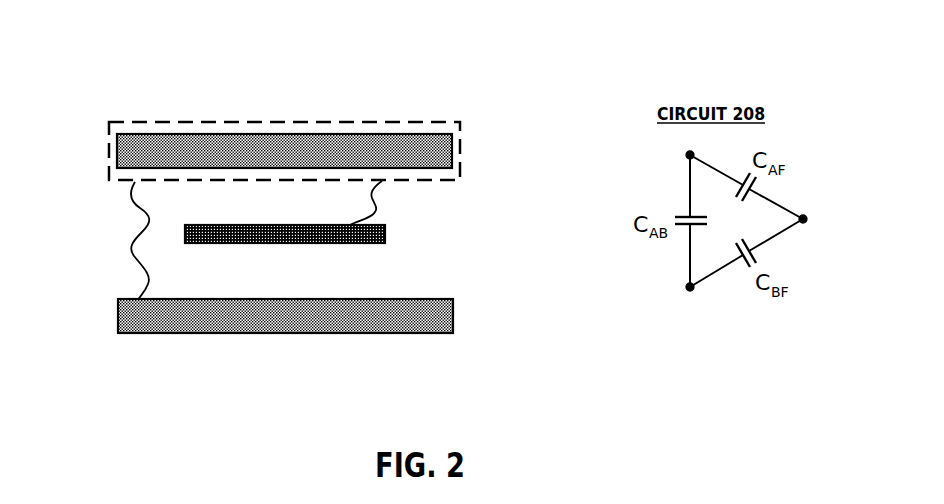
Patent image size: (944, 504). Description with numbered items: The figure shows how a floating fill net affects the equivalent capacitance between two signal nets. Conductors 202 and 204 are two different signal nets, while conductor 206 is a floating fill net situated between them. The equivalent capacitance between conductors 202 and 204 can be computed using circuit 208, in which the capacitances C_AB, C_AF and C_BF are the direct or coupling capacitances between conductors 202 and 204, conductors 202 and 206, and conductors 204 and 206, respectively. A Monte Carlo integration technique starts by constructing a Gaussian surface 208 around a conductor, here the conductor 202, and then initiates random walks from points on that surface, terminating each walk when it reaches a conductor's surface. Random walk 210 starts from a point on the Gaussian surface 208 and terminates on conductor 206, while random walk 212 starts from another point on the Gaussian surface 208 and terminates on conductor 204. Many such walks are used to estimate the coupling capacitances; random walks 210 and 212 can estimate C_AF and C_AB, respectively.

The conductor 202 is at (312, 150).
The conductor 204 is at (285, 344).
The conductor 206 is at (386, 232).
The Gaussian surface 208 is at (143, 122).
The random walk 210 is at (381, 203).
The random walk 212 is at (130, 243).